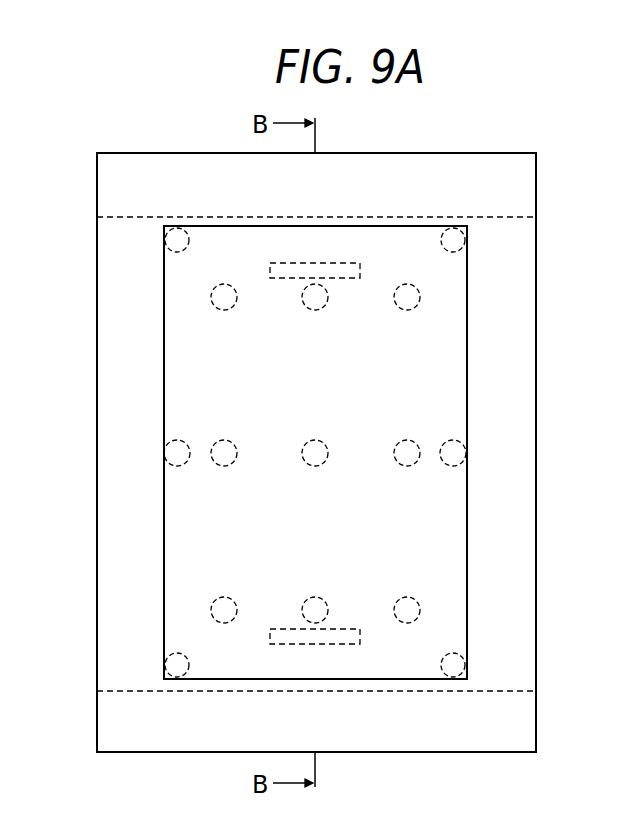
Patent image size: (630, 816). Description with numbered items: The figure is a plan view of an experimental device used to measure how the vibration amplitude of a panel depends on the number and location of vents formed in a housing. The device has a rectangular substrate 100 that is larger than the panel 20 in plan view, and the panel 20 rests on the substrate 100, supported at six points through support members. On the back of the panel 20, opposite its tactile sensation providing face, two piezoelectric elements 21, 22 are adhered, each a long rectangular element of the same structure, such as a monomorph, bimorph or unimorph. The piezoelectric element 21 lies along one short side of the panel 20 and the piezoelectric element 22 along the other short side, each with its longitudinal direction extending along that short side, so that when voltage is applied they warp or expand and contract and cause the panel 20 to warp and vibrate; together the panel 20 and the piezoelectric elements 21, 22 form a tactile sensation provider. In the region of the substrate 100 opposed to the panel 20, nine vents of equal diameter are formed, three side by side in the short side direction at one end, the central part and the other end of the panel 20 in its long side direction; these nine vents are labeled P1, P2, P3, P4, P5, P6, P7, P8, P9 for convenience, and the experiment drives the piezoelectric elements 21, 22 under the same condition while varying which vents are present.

The substrate 100 is at (528, 238).
The panel 20 is at (467, 363).
The piezoelectric element 21 is at (347, 645).
The piezoelectric element 22 is at (342, 262).
The vent P1 is at (212, 292).
The vent P2 is at (303, 305).
The vent P3 is at (420, 293).
The vent P4 is at (214, 446).
The vent P5 is at (303, 461).
The vent P6 is at (413, 441).
The vent P7 is at (212, 603).
The vent P8 is at (303, 601).
The vent P9 is at (420, 606).